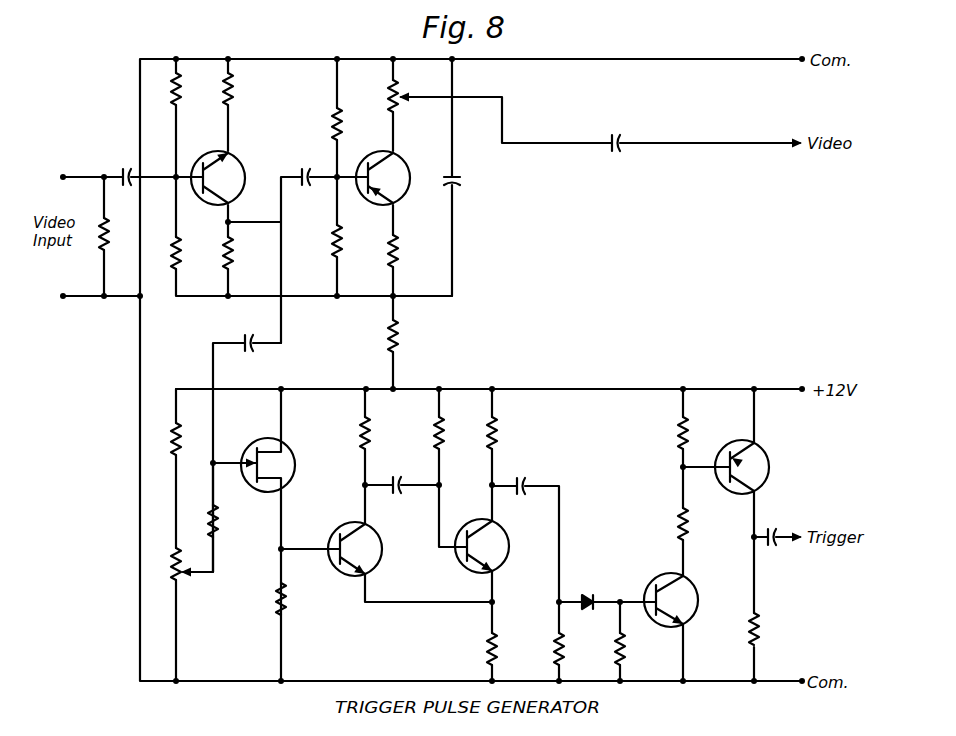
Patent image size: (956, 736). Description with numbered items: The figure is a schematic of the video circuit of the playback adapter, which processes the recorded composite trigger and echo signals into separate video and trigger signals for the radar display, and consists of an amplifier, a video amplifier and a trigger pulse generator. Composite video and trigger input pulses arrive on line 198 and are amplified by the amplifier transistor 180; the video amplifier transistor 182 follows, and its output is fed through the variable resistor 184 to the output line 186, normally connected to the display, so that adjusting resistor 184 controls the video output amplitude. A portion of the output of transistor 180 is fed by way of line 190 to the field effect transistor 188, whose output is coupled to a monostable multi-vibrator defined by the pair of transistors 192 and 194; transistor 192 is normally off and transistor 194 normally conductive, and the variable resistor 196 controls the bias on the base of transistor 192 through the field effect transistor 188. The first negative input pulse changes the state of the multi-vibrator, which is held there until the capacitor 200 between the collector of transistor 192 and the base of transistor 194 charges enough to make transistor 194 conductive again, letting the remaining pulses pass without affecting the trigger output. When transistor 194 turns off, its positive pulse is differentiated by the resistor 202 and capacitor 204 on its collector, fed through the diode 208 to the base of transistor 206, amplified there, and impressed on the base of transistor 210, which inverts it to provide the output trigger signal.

The amplifier transistor 180 is at (237, 160).
The video amplifier transistor 182 is at (403, 198).
The variable resistor 184 is at (395, 103).
The output line 186 is at (725, 145).
The field effect transistor 188 is at (289, 449).
The line 190 is at (281, 319).
The transistor 192 is at (376, 561).
The transistor 194 is at (502, 566).
The variable resistor 196 is at (178, 582).
The line 198 is at (78, 176).
The capacitor 200 is at (403, 482).
The resistor 202 is at (556, 648).
The capacitor 204 is at (527, 481).
The transistor 206 is at (708, 578).
The diode 208 is at (592, 597).
The transistor 210 is at (766, 456).